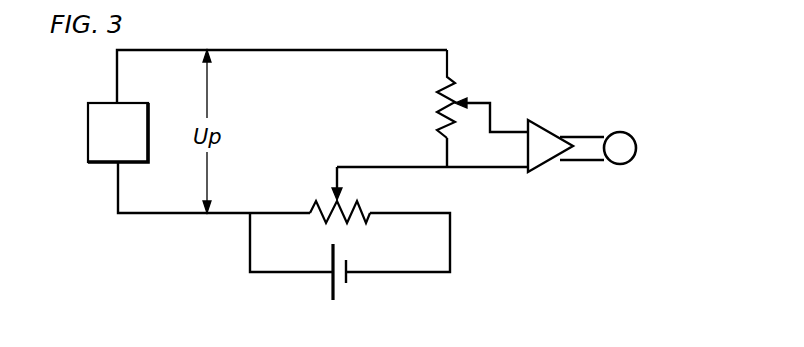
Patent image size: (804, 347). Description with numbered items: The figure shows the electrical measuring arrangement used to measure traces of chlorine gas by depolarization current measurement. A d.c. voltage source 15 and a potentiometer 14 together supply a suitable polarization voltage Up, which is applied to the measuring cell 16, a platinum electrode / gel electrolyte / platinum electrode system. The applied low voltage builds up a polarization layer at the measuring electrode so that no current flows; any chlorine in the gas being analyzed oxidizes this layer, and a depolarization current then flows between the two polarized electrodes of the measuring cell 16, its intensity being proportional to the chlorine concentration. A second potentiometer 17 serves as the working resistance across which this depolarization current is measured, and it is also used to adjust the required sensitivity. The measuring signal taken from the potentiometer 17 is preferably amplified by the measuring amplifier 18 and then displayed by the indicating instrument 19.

The potentiometer 14 is at (330, 203).
The d.c. voltage source 15 is at (336, 254).
The measuring cell 16 is at (118, 132).
The potentiometer 17 is at (440, 95).
The measuring amplifier 18 is at (548, 160).
The indicating instrument 19 is at (625, 165).